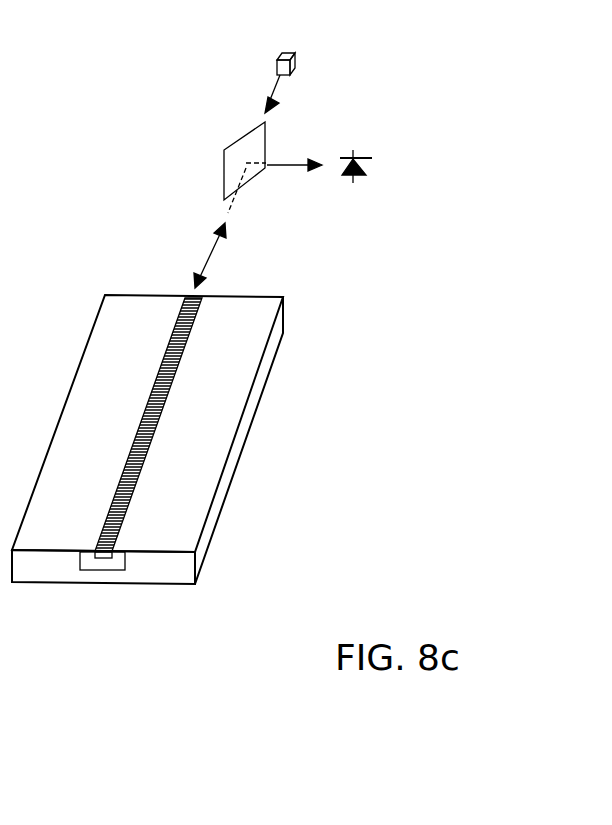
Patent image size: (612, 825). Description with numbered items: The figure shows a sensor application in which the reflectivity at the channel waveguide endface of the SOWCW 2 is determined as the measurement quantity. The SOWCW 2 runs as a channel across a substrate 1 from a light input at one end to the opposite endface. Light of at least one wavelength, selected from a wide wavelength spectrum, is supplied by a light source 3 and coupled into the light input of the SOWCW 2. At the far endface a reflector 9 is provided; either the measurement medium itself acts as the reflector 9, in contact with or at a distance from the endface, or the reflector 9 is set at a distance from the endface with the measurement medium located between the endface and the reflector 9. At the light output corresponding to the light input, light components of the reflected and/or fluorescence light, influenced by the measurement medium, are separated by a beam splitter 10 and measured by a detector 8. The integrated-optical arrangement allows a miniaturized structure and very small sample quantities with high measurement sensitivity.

The substrate / optical chip 1 is at (283, 332).
The SOWCW 2 is at (153, 398).
The light source 3 is at (293, 70).
The detector 8 is at (358, 153).
The reflector 9 is at (110, 567).
The beam splitter 10 is at (240, 133).